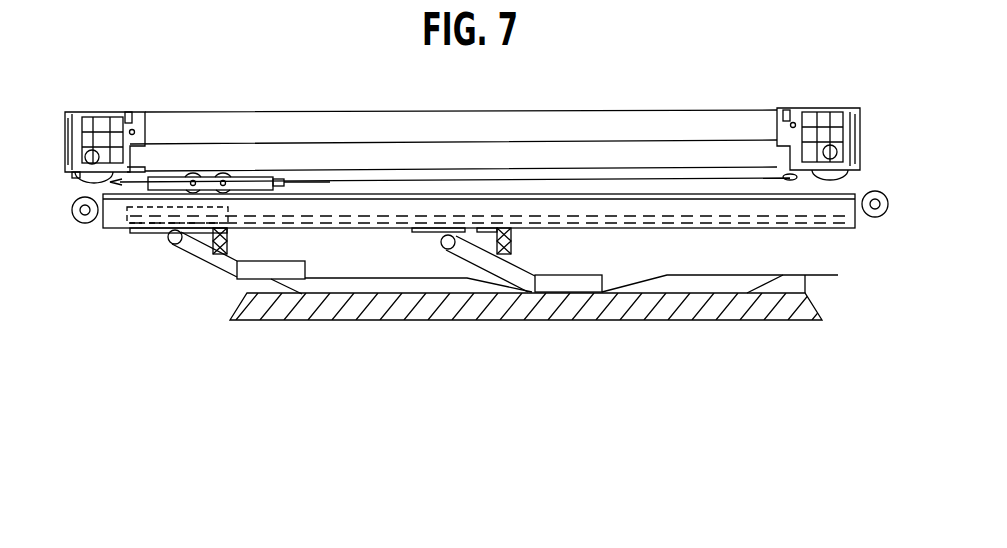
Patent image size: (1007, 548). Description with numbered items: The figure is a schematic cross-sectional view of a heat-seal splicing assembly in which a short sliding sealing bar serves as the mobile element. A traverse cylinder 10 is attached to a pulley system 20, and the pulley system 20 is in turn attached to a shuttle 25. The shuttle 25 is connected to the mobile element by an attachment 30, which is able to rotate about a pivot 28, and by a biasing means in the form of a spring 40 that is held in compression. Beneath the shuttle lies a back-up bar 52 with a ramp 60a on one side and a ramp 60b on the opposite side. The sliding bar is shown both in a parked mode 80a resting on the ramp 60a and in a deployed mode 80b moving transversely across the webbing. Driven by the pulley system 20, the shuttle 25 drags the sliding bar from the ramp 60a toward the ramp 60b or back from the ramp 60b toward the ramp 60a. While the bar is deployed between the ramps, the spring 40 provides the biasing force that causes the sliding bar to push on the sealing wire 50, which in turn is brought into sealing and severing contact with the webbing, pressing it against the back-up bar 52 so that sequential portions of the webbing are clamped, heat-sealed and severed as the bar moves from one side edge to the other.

The traverse cylinder 10 is at (521, 104).
The pulley system 20 is at (212, 166).
The shuttle 25 is at (148, 218).
The pivot 28 is at (173, 244).
The attachment 30 is at (199, 253).
The spring 40 is at (227, 233).
The sealing wire 50 is at (400, 293).
The back-up bar 52 is at (500, 312).
The ramp 60a is at (277, 283).
The ramp 60b is at (782, 278).
The sliding bar in parked mode 80a is at (293, 271).
The sliding bar in deployed mode 80b is at (573, 289).